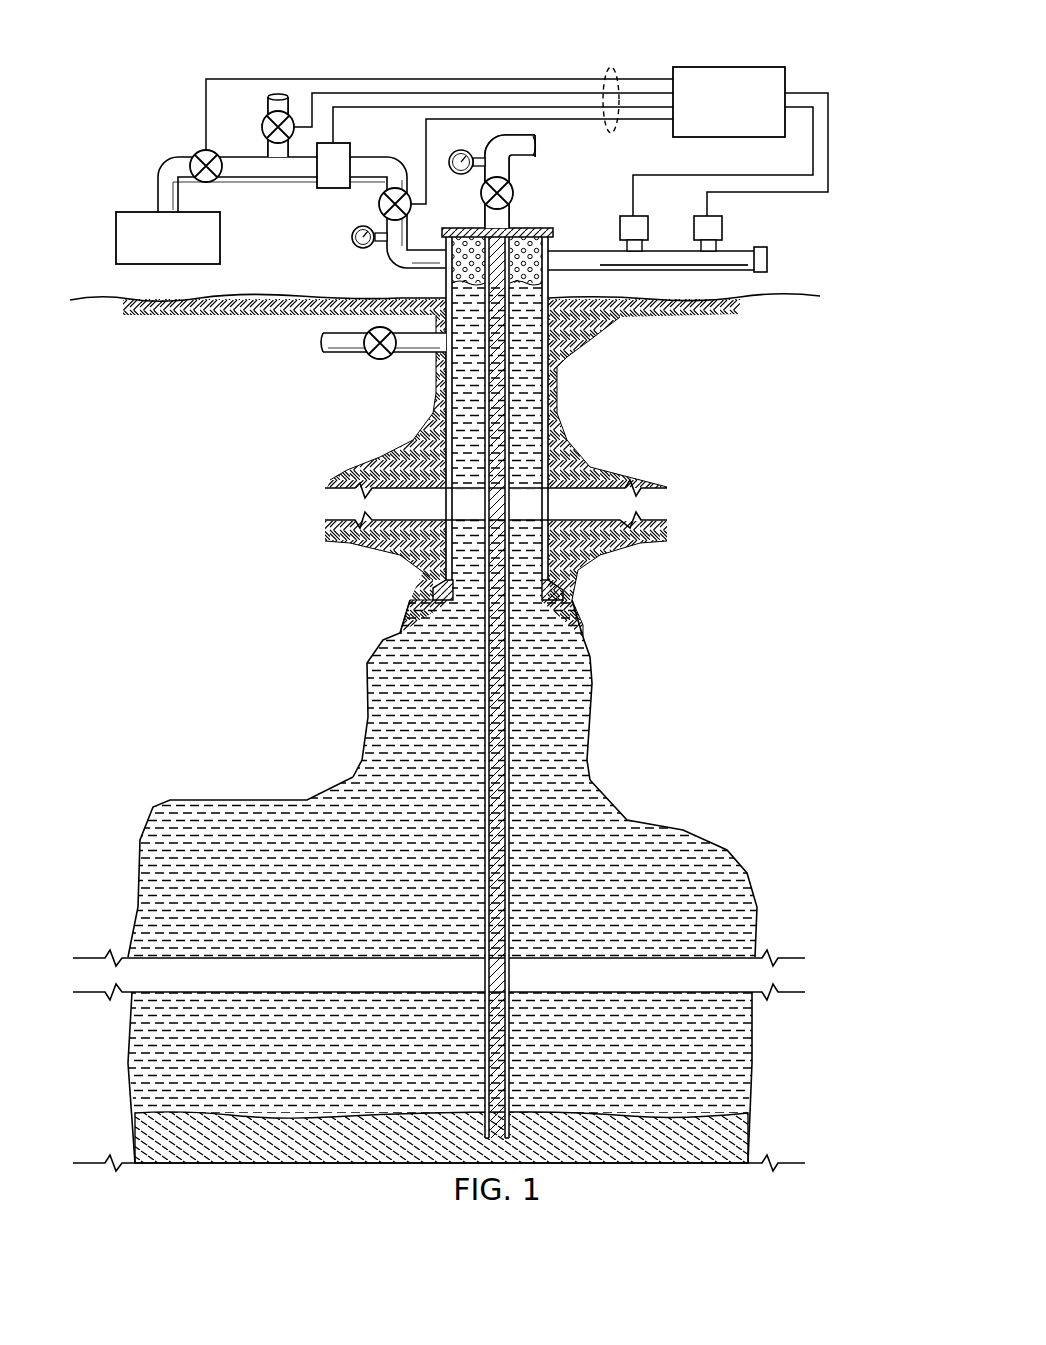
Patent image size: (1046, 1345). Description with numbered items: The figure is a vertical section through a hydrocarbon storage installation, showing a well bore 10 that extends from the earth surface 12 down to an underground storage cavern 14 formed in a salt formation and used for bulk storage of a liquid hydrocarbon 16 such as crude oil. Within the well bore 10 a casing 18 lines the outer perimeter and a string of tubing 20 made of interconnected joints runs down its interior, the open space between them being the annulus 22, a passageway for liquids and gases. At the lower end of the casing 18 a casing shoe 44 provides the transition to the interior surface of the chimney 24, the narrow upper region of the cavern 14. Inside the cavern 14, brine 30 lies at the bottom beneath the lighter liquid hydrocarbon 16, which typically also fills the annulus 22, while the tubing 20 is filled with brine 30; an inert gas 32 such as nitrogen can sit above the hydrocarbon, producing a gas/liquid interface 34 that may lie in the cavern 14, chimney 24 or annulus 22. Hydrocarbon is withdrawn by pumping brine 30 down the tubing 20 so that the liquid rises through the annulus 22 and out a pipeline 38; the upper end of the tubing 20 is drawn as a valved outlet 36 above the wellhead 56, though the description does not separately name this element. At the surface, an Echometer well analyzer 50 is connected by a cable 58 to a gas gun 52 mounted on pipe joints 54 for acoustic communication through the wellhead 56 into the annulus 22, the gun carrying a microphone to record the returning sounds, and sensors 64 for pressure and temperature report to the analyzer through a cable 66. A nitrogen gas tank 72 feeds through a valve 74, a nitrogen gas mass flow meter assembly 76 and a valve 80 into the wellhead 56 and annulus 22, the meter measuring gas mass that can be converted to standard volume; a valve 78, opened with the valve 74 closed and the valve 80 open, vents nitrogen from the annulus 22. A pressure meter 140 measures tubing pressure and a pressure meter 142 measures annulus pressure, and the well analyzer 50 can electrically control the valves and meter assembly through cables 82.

The well bore 10 is at (415, 421).
The earth surface 12 is at (787, 293).
The underground storage cavern 14 is at (442, 723).
The liquid hydrocarbon 16 is at (642, 832).
The casing 18 is at (548, 355).
The tubing 20 is at (509, 408).
The annulus 22 is at (528, 437).
The chimney 24 is at (592, 675).
The brine 30 is at (687, 1160).
The inert gas 32 is at (453, 255).
The gas/liquid interface 34 is at (525, 271).
The tubing outlet pipe 36 is at (512, 217).
The pipeline 38 is at (337, 353).
The casing shoe 44 is at (433, 583).
The well analyzer 50 is at (728, 67).
The gas gun 52 is at (722, 222).
The pipe joints 54 is at (665, 250).
The wellhead 56 is at (553, 230).
The cable 58 is at (795, 192).
The sensors 64 is at (627, 215).
The cable 66 is at (660, 175).
The nitrogen gas tank 72 is at (140, 212).
The valve 74 is at (200, 152).
The nitrogen gas mass flow meter assembly 76 is at (315, 185).
The valve 78 is at (262, 127).
The valve 80 is at (378, 202).
The cables 82 is at (612, 68).
The pressure meter 140 is at (462, 175).
The pressure meter 142 is at (351, 240).